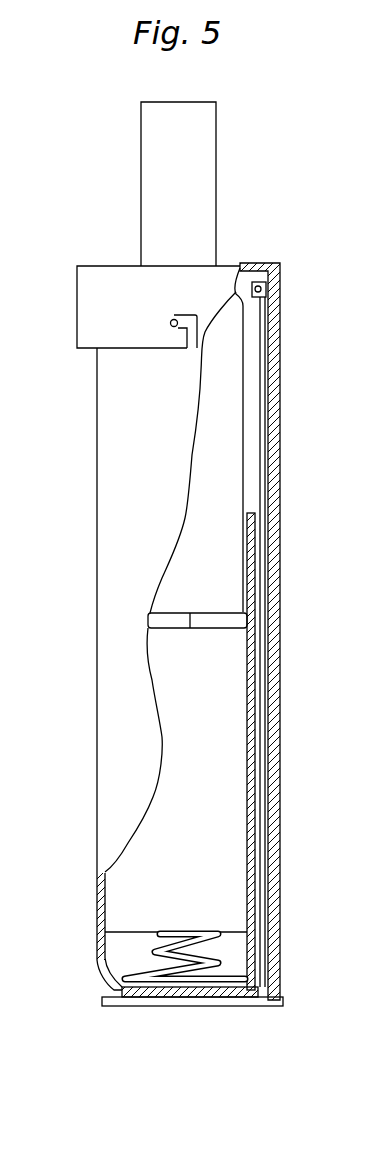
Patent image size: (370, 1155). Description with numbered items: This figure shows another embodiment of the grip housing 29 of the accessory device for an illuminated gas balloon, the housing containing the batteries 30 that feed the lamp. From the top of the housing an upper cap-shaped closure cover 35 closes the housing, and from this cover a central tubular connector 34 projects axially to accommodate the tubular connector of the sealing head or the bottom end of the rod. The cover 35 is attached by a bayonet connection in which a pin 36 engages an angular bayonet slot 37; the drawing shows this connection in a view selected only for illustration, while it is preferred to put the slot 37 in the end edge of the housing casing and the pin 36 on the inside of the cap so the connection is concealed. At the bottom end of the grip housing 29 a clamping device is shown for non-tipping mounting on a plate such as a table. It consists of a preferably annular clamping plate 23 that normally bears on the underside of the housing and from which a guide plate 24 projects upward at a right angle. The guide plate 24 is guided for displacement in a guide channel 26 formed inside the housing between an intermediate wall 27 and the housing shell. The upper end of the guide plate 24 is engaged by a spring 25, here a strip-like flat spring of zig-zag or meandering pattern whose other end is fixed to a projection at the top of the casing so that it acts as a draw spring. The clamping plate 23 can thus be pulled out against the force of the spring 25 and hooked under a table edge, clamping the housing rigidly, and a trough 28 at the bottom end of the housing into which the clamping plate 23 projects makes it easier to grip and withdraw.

The clamping plate 23 is at (233, 1000).
The guide plate 24 is at (262, 752).
The spring 25 is at (277, 426).
The guide channel 26 is at (243, 551).
The intermediate wall 27 is at (253, 830).
The trough 28 is at (105, 973).
The grip housing 29 is at (125, 535).
The battery 30 is at (230, 471).
The central tubular connector 34 is at (205, 187).
The cap-shaped closure cover 35 is at (106, 283).
The pin 36 is at (171, 322).
The bayonet slot 37 is at (193, 312).